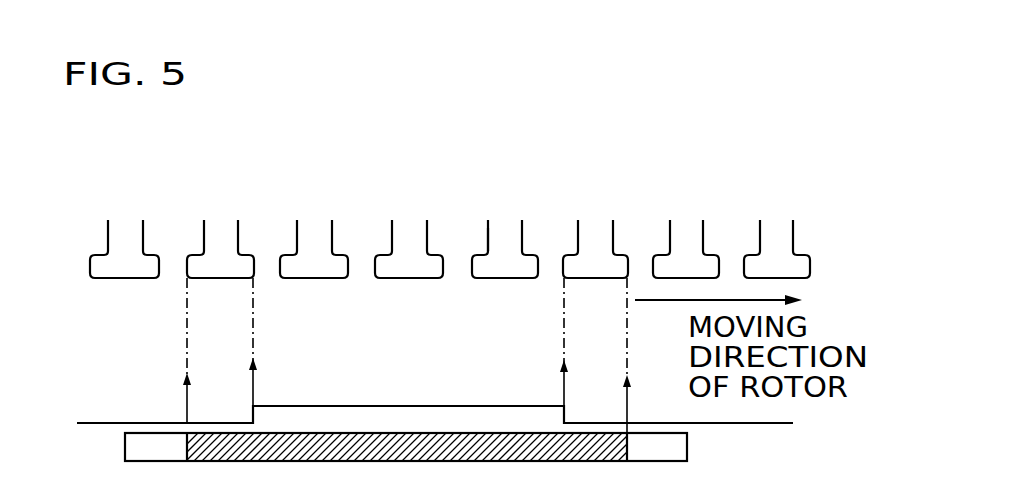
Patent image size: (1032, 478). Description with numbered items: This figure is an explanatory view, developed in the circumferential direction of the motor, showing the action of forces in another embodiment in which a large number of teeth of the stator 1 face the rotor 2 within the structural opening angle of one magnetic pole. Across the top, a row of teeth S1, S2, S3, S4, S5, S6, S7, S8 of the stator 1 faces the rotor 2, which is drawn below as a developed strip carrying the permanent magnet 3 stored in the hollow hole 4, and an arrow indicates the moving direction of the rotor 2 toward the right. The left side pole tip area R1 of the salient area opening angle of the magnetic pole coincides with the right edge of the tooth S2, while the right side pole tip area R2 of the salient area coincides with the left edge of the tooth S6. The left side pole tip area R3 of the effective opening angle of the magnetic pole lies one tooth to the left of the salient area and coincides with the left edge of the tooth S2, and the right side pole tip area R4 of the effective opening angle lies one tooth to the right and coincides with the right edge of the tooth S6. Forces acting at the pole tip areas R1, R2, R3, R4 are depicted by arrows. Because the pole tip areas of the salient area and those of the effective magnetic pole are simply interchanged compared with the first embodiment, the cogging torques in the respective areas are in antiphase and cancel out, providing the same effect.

The stator 1 is at (521, 229).
The rotor 2 is at (467, 417).
The permanent magnet 3 is at (378, 433).
The hollow hole 4 is at (133, 445).
The left side pole tip area of salient area of magnetic pole R1 is at (248, 398).
The right side pole tip area of salient area of magnetic pole R2 is at (570, 398).
The left side pole tip area of effective magnetic pole R3 is at (185, 420).
The right side pole tip area of effective magnetic pole R4 is at (628, 418).
The tooth S1 is at (124, 249).
The tooth S2 is at (220, 249).
The tooth S3 is at (314, 249).
The tooth S4 is at (409, 249).
The tooth S5 is at (505, 249).
The tooth S6 is at (595, 249).
The tooth S7 is at (686, 249).
The tooth S8 is at (777, 249).